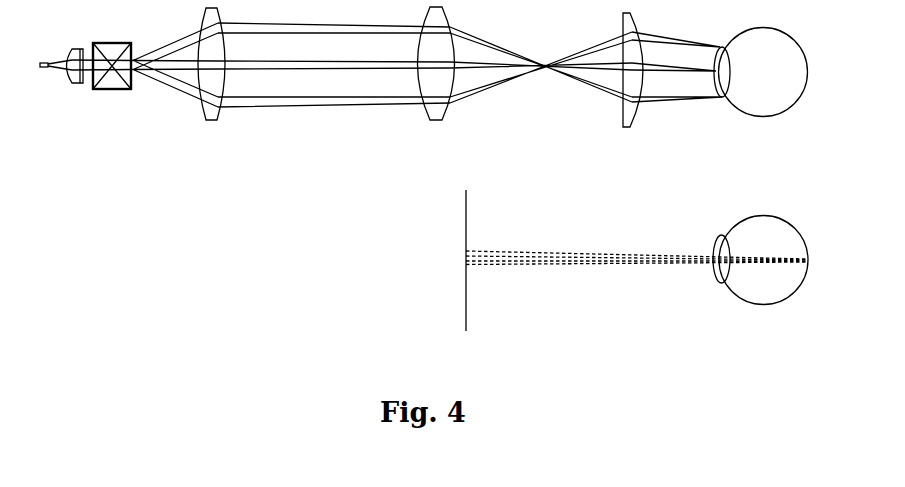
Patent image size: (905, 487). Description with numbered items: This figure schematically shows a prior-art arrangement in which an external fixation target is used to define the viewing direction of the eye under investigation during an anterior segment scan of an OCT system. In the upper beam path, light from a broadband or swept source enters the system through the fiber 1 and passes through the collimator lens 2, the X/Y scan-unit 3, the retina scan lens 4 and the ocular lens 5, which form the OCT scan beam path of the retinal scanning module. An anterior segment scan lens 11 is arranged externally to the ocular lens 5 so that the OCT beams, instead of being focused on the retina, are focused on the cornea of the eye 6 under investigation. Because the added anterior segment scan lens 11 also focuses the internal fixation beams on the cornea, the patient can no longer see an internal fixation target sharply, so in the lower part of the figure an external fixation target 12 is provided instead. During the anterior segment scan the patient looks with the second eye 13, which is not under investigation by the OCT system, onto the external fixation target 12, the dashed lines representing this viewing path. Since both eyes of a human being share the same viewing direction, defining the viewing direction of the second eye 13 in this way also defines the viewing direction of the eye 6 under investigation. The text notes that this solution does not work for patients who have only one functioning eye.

The fiber 1 is at (44, 75).
The collimator lens 2 is at (75, 78).
The X/Y scan-unit 3 is at (112, 76).
The retina scan lens 4 is at (211, 76).
The ocular lens 5 is at (436, 75).
The anterior segment scan lens 11 is at (632, 79).
The eye under investigation 6 is at (761, 87).
The external fixation target 12 is at (465, 276).
The second eye 13 is at (760, 283).